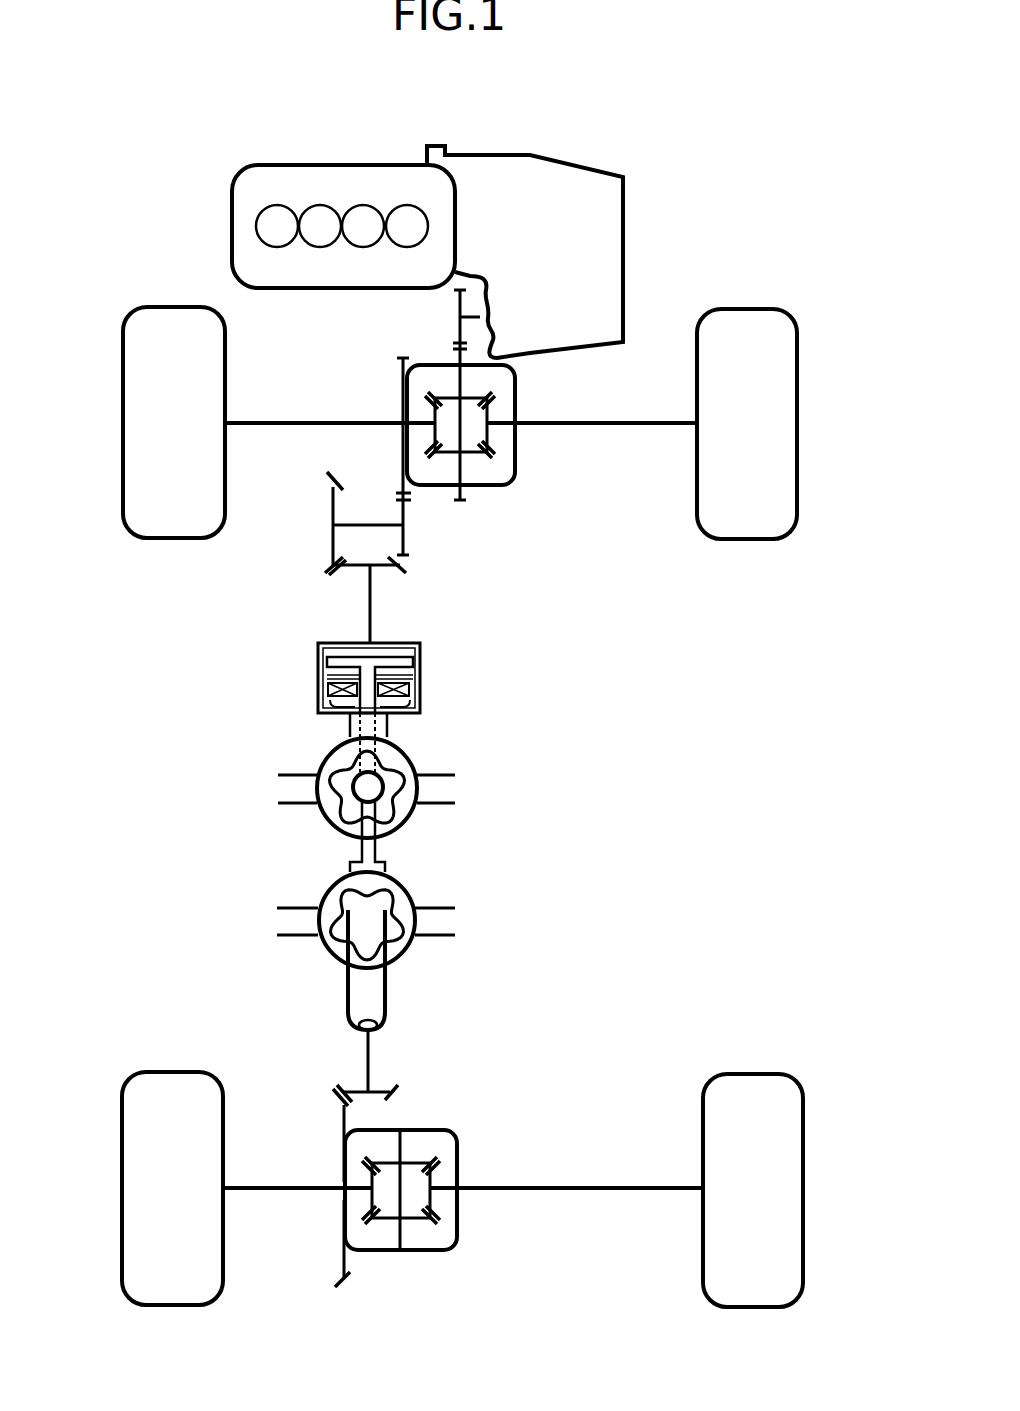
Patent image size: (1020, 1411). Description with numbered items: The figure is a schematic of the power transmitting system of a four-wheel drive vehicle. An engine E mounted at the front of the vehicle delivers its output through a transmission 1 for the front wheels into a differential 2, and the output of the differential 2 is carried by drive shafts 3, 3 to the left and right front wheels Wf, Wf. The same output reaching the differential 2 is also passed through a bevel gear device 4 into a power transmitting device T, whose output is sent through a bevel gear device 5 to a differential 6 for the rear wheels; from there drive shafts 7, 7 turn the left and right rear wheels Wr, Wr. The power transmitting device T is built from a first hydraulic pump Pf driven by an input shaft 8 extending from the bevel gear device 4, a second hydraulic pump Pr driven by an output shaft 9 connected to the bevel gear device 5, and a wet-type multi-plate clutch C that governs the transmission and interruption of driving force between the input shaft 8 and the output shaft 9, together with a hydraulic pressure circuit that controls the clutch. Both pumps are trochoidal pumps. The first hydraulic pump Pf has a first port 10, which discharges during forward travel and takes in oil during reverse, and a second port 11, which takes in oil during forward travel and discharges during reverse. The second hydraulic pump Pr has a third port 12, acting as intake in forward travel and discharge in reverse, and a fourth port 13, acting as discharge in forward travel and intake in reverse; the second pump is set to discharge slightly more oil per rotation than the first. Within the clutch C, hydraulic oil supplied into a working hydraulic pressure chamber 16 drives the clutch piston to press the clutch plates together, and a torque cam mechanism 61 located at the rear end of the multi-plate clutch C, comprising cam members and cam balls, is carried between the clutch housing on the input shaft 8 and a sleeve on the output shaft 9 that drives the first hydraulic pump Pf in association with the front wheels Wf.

The engine E is at (267, 160).
The transmission 1 is at (613, 233).
The front wheels Wf is at (176, 316).
The drive shafts 3 is at (338, 420).
The differential 2 is at (517, 405).
The bevel gear device 4 is at (312, 548).
The input shaft 8 is at (372, 632).
The multi-plate clutch C is at (418, 679).
The torque cam mechanism 61 is at (393, 692).
The working hydraulic pressure chamber 16 is at (398, 707).
The power transmitting device T is at (300, 844).
The first hydraulic pump Pf is at (296, 755).
The first port 10 is at (307, 805).
The second port 11 is at (423, 803).
The third port 12 is at (310, 910).
The fourth port 13 is at (427, 912).
The second hydraulic pump Pr is at (302, 953).
The output shaft 9 is at (370, 1063).
The bevel gear device 5 is at (322, 1095).
The differential 6 is at (457, 1173).
The drive shafts 7 is at (313, 1192).
The rear wheels Wr is at (175, 1080).